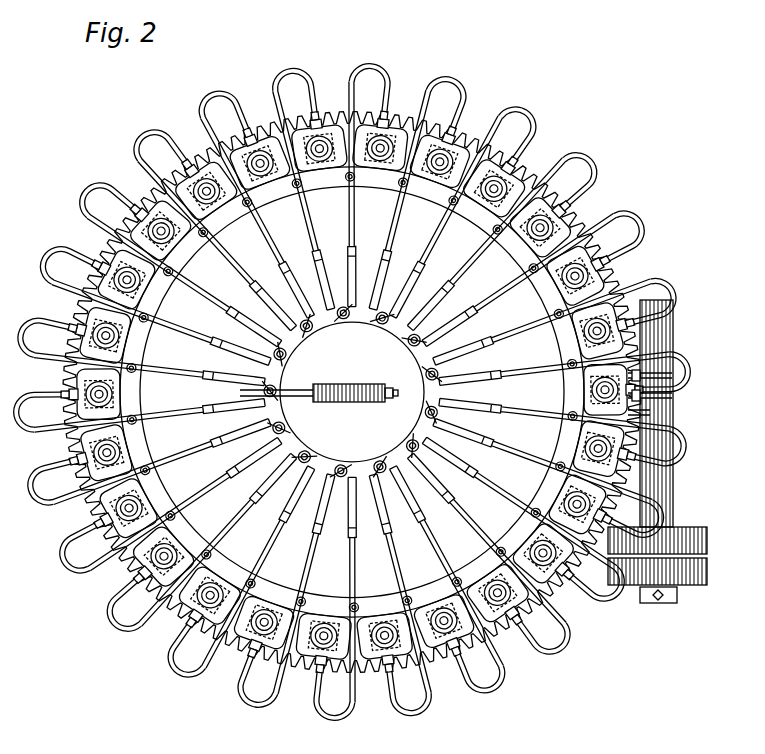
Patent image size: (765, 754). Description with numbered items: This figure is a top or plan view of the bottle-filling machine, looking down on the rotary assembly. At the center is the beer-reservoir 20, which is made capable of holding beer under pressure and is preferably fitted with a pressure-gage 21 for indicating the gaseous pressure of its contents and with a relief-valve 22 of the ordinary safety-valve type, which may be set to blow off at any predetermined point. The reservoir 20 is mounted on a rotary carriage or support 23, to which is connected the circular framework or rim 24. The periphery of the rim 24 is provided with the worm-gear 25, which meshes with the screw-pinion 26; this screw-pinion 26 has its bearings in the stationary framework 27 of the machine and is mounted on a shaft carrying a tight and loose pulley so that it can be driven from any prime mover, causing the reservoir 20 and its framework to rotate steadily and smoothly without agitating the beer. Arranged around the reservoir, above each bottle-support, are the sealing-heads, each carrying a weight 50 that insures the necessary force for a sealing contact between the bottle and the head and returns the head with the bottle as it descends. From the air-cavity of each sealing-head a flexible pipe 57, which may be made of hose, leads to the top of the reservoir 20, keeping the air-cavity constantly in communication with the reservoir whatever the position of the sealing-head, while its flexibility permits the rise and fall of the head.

The beer-reservoir 20 is at (352, 392).
The pressure-gage 21 is at (356, 384).
The relief-valve 22 is at (392, 389).
The rotary carriage 23 is at (180, 400).
The circular framework 24 is at (352, 378).
The worm-gear 25 is at (351, 392).
The screw-pinion 26 is at (668, 398).
The stationary framework 27 is at (664, 451).
The weight 50 is at (347, 411).
The flexible pipe 57 is at (351, 396).